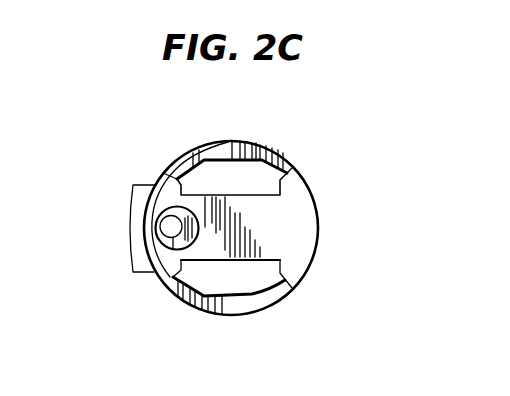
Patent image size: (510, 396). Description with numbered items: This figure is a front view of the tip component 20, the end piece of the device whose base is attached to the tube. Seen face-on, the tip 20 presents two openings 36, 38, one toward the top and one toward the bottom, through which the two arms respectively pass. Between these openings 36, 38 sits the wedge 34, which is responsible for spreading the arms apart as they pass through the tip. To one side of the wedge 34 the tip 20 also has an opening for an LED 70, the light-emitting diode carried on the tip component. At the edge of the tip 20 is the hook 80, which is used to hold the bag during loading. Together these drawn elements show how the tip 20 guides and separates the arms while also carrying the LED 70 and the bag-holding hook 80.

The tip component 20 is at (138, 128).
The wedge 34 is at (263, 228).
The opening 36 is at (228, 285).
The opening 38 is at (228, 173).
The LED 70 is at (168, 225).
The hook 80 is at (135, 247).